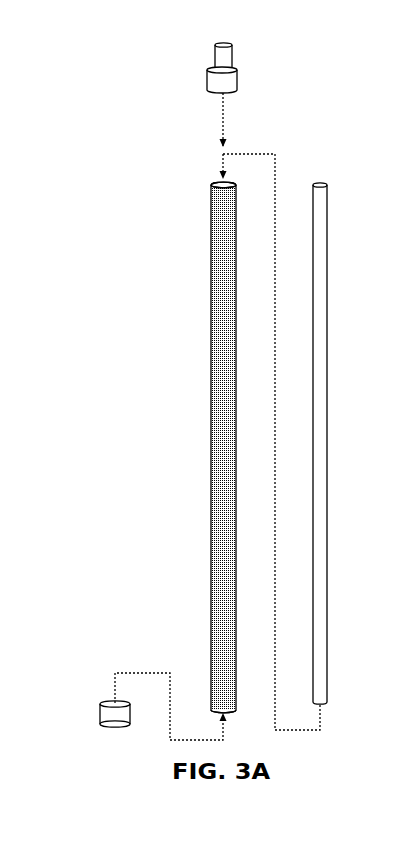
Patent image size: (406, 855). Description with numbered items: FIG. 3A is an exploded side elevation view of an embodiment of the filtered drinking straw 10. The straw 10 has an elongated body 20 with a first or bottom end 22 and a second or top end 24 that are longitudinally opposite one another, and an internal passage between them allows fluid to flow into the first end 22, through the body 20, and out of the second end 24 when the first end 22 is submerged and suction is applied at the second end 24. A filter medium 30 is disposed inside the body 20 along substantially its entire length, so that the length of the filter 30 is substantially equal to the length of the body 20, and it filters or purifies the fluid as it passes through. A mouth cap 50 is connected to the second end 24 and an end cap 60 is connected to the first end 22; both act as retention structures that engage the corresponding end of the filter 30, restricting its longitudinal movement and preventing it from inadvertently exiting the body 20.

The filtered drinking straw 10 is at (162, 103).
The body 20 is at (210, 258).
The first end 22 is at (211, 713).
The second end 24 is at (211, 184).
The filter medium 30 is at (328, 231).
The mouth cap 50 is at (259, 52).
The end cap 60 is at (100, 716).